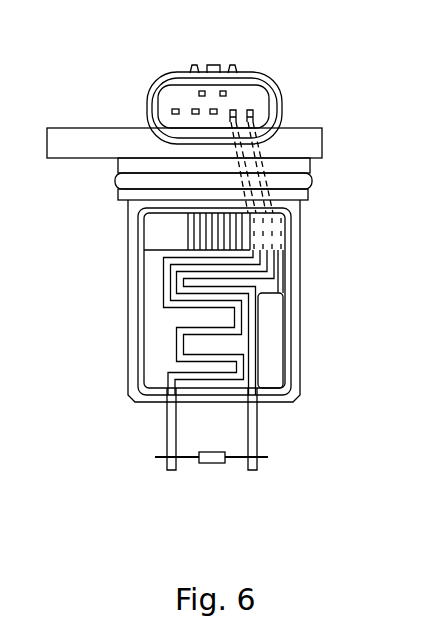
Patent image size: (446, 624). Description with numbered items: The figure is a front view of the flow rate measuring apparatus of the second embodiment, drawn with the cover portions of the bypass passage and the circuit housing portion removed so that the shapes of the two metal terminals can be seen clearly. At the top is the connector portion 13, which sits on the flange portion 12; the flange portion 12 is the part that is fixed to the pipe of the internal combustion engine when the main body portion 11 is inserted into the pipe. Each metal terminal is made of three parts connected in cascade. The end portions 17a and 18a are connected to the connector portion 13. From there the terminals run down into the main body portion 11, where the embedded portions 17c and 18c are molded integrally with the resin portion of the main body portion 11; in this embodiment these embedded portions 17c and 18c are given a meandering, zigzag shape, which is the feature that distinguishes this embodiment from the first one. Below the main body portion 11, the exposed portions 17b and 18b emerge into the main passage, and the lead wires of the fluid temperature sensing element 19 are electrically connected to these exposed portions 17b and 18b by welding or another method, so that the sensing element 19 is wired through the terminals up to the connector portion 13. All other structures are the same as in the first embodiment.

The main body portion 11 is at (302, 263).
The flange portion 12 is at (95, 132).
The connector portion 13 is at (283, 110).
The end portion 17a is at (251, 108).
The exposed portion 17b is at (259, 440).
The embedded portion 17c is at (258, 318).
The end portion 18a is at (234, 108).
The exposed portion 18b is at (165, 445).
The embedded portion 18c is at (175, 322).
The fluid temperature sensing element 19 is at (210, 465).